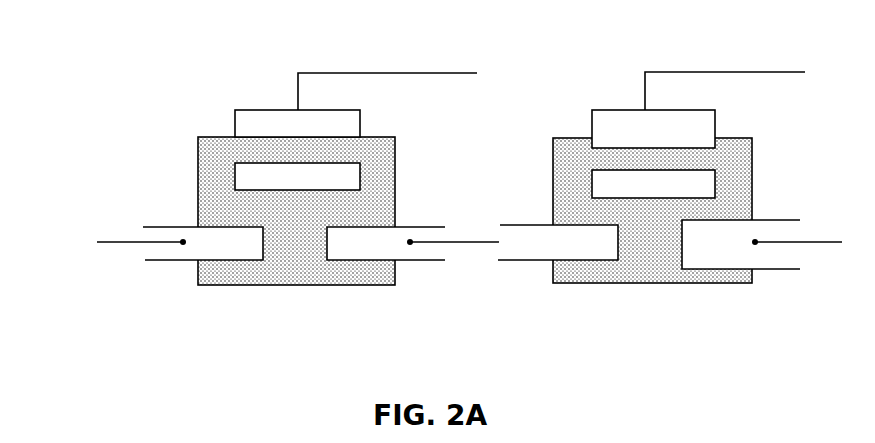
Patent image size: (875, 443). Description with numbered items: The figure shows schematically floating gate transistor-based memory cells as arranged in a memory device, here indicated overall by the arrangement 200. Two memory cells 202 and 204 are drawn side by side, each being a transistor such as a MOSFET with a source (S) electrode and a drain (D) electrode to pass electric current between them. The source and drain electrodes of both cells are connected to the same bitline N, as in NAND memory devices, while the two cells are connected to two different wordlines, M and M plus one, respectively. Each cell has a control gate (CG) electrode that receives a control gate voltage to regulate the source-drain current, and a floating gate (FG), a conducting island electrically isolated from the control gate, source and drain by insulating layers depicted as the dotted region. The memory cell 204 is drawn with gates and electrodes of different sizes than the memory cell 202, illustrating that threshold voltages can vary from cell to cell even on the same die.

The memory cell array 200 is at (176, 106).
The memory cell 202 is at (319, 203).
The memory cell 204 is at (670, 204).